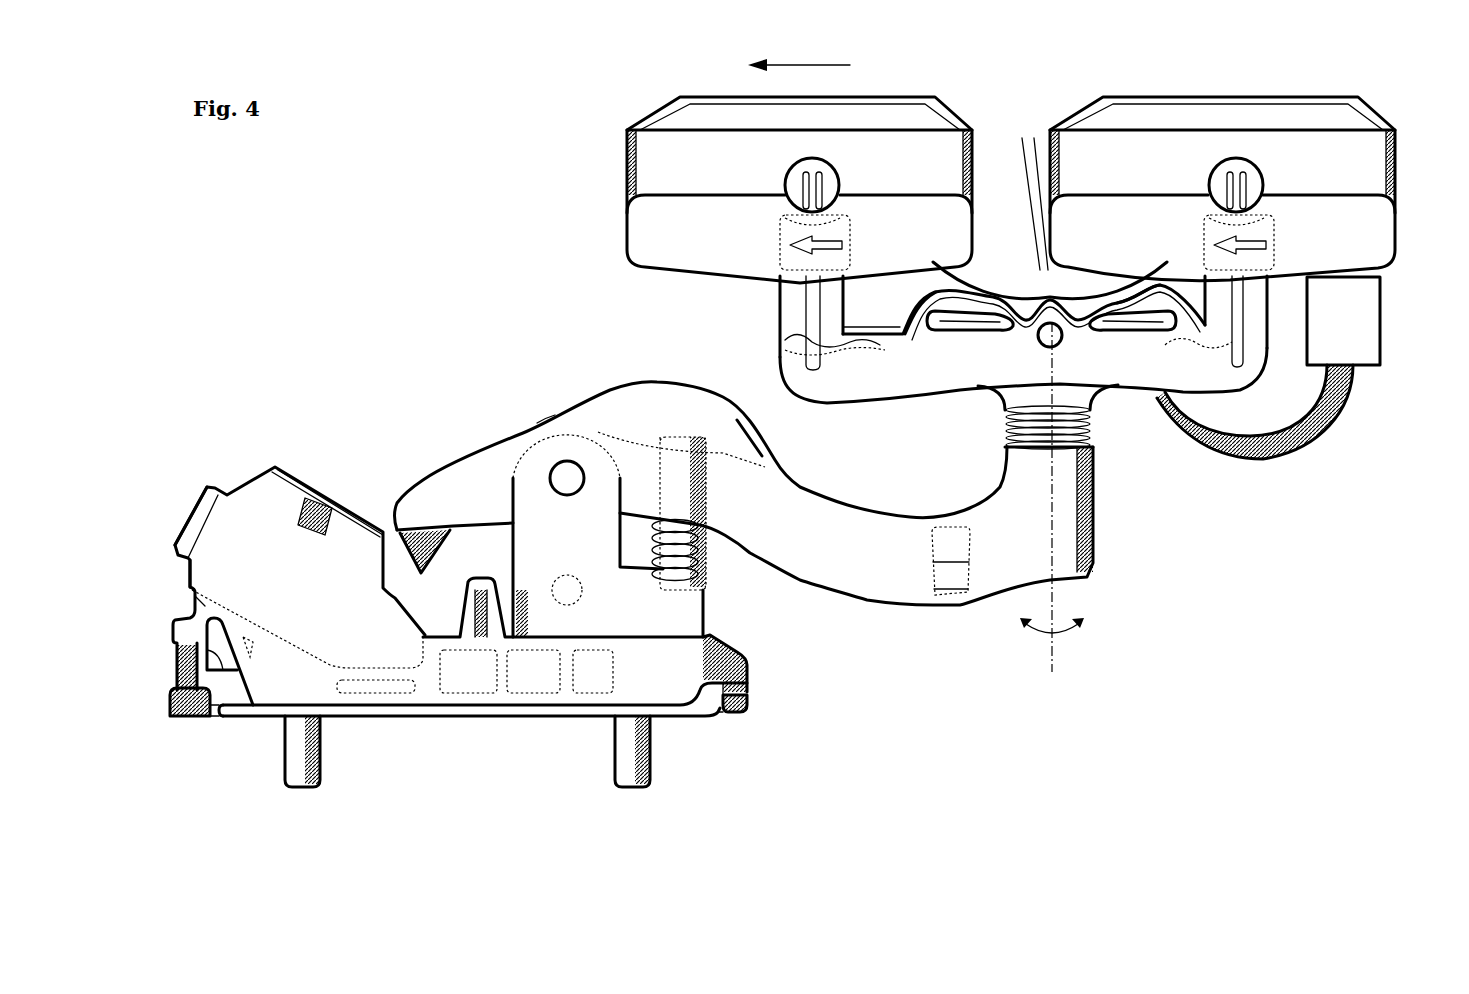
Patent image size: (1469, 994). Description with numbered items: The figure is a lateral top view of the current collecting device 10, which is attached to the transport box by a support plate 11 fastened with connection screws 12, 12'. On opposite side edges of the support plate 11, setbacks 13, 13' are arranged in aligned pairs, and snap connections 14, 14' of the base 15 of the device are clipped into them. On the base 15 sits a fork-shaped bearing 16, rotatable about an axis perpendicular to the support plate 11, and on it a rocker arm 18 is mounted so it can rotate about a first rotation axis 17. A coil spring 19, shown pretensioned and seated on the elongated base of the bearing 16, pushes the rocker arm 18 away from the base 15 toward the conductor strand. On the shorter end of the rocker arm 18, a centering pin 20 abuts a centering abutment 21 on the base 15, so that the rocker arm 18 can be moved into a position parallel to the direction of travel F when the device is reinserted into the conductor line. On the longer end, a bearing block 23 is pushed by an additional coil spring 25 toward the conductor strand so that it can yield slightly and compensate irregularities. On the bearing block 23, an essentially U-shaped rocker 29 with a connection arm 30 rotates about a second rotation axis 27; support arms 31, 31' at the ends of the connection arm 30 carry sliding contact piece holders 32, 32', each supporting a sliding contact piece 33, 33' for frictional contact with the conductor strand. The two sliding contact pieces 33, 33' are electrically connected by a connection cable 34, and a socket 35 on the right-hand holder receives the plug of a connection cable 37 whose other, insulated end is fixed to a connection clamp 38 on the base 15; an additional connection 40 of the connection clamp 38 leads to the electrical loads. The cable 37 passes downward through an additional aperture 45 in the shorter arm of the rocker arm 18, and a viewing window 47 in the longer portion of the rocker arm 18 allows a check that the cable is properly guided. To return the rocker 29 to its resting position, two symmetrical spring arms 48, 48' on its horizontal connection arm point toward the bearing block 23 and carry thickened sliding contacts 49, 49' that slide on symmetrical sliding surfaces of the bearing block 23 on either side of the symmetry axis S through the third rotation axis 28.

The current collecting device 10 is at (416, 245).
The direction of travel F is at (799, 54).
The support plate 11 is at (368, 720).
The connection screw 12 is at (677, 757).
The connection screw 12' is at (255, 754).
The setback 13 is at (757, 732).
The setback 13' is at (173, 743).
The snap connection 14 is at (773, 717).
The snap connection 14' is at (152, 718).
The base 15 is at (193, 610).
The fork-shaped bearing 16 is at (556, 442).
The first rotation axis 17 is at (572, 470).
The rocker arm 18 is at (1093, 563).
The coil spring 19 is at (698, 562).
The centering pin 20 is at (422, 574).
The centering abutment 21 is at (462, 600).
The bearing block 23 is at (1000, 400).
The additional coil spring 25 is at (1092, 425).
The second rotation axis 27 is at (1048, 655).
The third rotation axis 28 is at (1045, 320).
The rocker 29 is at (820, 338).
The connection arm 30 is at (868, 395).
The support arm 31 is at (1254, 331).
The support arm 31' is at (758, 323).
The sliding contact piece holder 32 is at (1259, 205).
The sliding contact piece holder 32' is at (754, 203).
The sliding contact piece 33 is at (1247, 88).
The sliding contact piece 33' is at (772, 91).
The connection cable 34 is at (1045, 285).
The socket 35 is at (1380, 345).
The connection cable 37 is at (1340, 420).
The connection clamp 38 is at (298, 475).
The additional connection 40 is at (195, 500).
The additional aperture 45 is at (534, 414).
The viewing window 47 is at (950, 562).
The spring arm 48 is at (1141, 260).
The spring arm 48' is at (918, 275).
The sliding contact 49 is at (1133, 276).
The sliding contact 49' is at (971, 279).
The symmetry axis S is at (1050, 372).